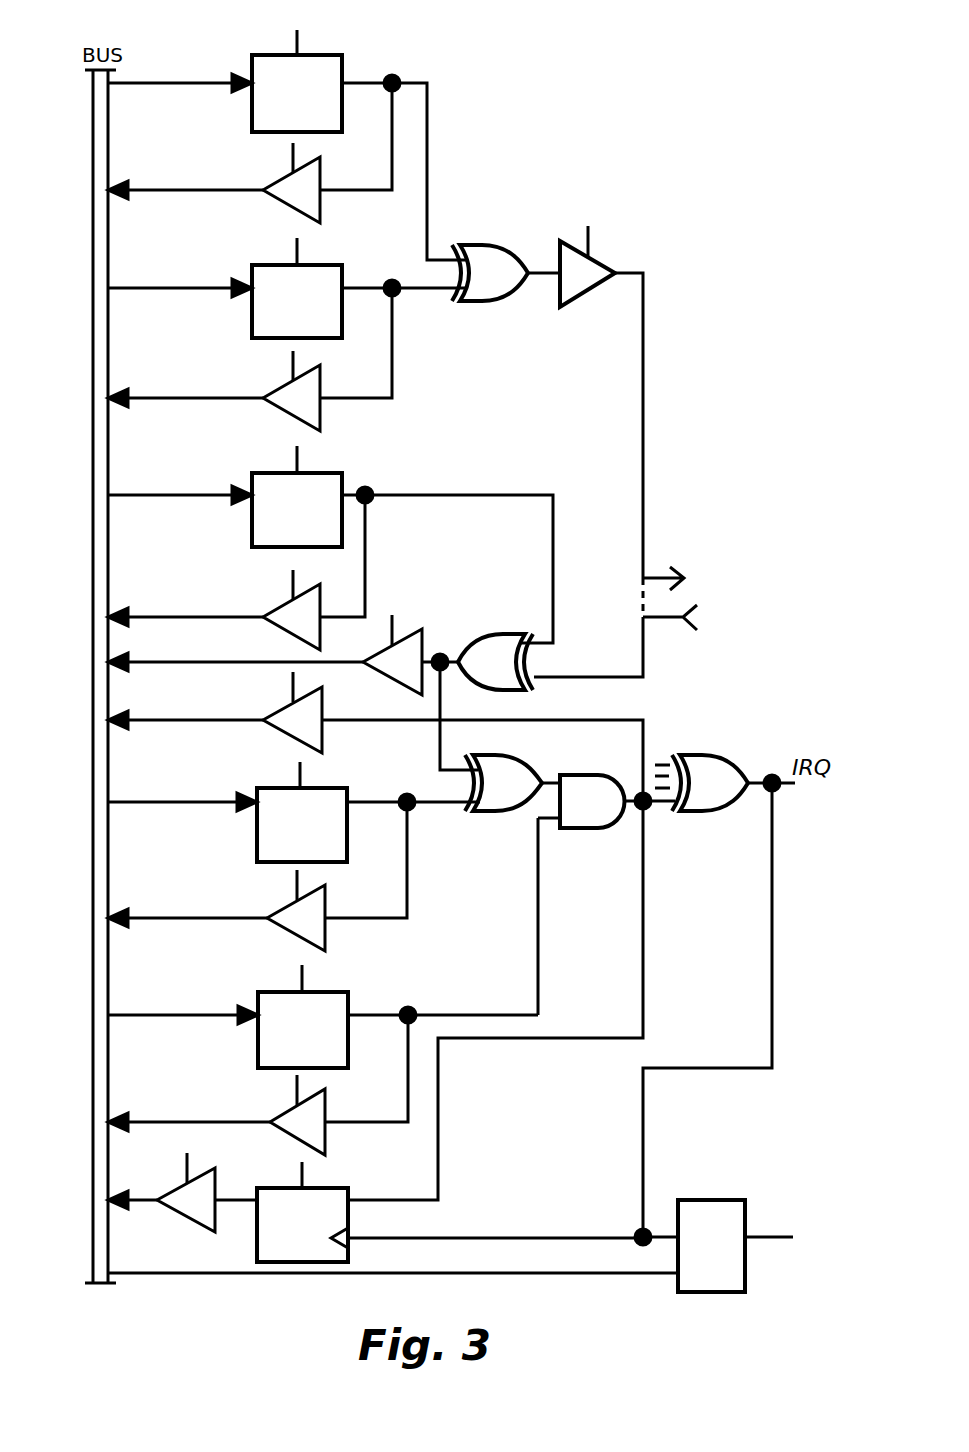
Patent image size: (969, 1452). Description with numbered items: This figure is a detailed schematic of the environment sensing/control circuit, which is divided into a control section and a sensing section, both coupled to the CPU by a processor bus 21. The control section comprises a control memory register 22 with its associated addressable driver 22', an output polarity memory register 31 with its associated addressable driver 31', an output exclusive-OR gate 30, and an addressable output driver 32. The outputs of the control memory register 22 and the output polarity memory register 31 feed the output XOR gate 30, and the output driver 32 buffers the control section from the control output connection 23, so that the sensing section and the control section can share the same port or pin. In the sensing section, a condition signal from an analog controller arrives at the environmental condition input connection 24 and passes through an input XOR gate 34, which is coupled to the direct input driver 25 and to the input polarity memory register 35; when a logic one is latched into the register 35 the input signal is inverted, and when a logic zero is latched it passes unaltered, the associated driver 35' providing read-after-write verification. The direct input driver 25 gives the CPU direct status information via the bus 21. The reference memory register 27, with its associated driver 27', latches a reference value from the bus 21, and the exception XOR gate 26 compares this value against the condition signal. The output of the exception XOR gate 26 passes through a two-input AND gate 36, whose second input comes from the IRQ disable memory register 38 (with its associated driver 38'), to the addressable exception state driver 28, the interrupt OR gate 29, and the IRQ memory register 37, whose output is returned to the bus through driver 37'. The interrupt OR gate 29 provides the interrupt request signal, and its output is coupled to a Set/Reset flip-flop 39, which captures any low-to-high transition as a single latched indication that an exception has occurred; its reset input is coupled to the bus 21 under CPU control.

The processor bus 21 is at (108, 178).
The control memory register 22 is at (302, 145).
The addressable driver 22' is at (214, 182).
The output polarity memory register 31 is at (287, 314).
The addressable driver 31' is at (214, 388).
The output exclusive-OR gate 30 is at (462, 246).
The addressable output driver 32 is at (598, 245).
The control output connection 23 is at (660, 575).
The environmental condition input connection 24 is at (672, 618).
The input polarity memory register 35 is at (330, 542).
The associated driver 35' is at (214, 601).
The direct input driver 25 is at (408, 628).
The input exclusive-OR gate 34 is at (500, 636).
The addressable exception state driver 28 is at (285, 705).
The reference memory register 27 is at (294, 827).
The associated driver 27' is at (216, 910).
The exception exclusive-OR gate 26 is at (505, 812).
The two-input AND gate 36 is at (612, 830).
The interrupt OR gate 29 is at (735, 805).
The IRQ disable memory register 38 is at (323, 1029).
The associated driver 38' is at (216, 1103).
The IRQ memory register 37 is at (429, 1201).
The buffer 37' is at (161, 1203).
The Set/Reset flip-flop 39 is at (722, 1200).